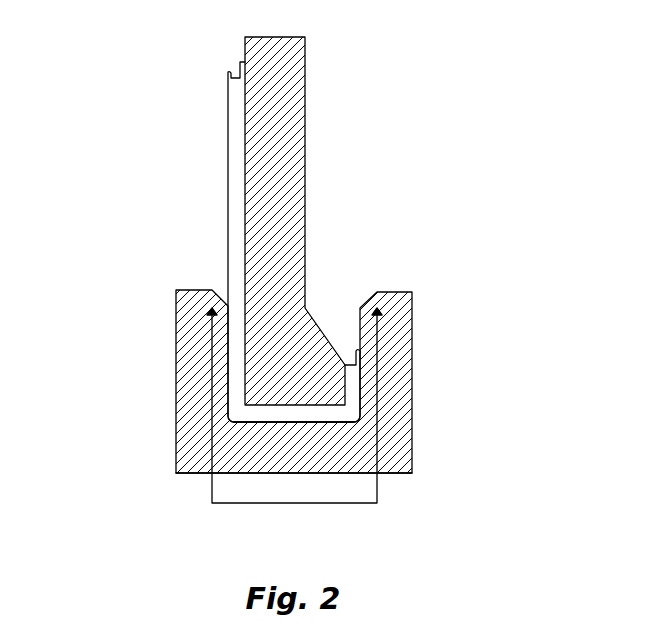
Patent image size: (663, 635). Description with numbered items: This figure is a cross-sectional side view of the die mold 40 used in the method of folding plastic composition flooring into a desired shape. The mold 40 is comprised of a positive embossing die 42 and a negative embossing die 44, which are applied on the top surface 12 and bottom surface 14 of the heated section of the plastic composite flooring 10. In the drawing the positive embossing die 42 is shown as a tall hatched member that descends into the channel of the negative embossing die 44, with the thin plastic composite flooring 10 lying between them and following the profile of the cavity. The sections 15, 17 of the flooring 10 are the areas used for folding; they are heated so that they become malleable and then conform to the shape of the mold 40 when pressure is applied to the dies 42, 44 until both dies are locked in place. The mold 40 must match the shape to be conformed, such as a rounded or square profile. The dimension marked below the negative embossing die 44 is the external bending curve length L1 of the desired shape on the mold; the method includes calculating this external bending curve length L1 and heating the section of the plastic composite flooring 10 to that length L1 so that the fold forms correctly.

The plastic composite flooring 10 is at (363, 383).
The top surface 12 is at (248, 120).
The bottom surface 14 is at (228, 142).
The heating section 15 is at (177, 460).
The heating section 17 is at (362, 421).
The mold 40 is at (158, 258).
The positive embossing die 42 is at (285, 133).
The negative embossing die 44 is at (355, 475).
The external bending curve length L1 is at (292, 508).